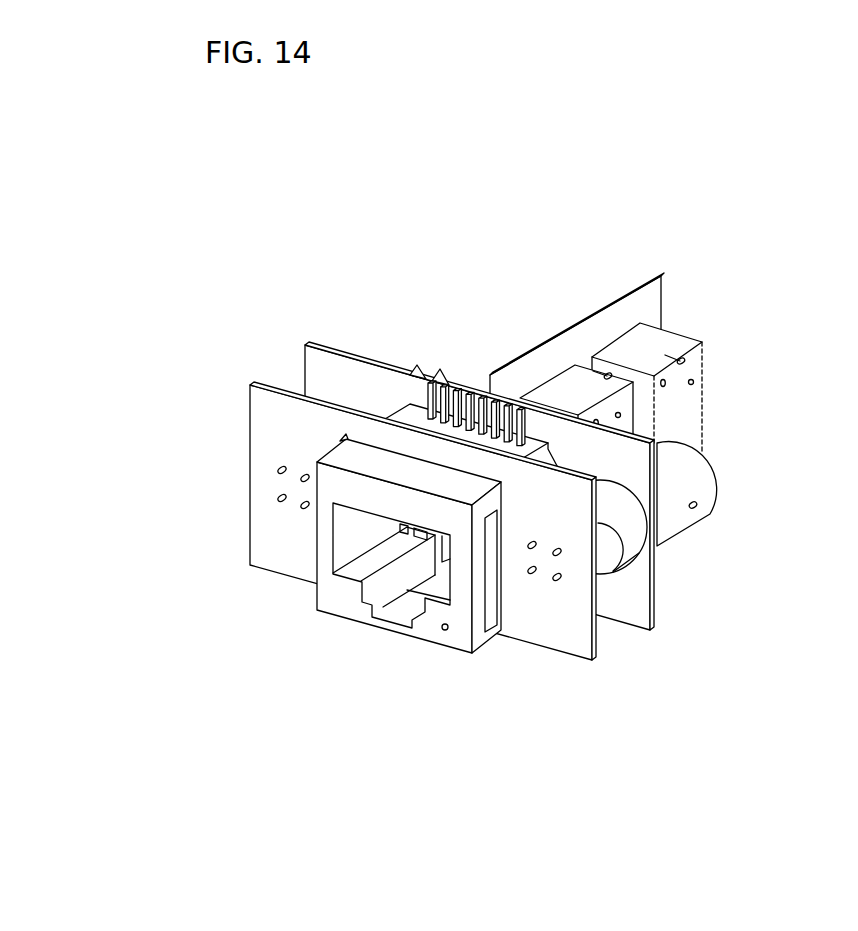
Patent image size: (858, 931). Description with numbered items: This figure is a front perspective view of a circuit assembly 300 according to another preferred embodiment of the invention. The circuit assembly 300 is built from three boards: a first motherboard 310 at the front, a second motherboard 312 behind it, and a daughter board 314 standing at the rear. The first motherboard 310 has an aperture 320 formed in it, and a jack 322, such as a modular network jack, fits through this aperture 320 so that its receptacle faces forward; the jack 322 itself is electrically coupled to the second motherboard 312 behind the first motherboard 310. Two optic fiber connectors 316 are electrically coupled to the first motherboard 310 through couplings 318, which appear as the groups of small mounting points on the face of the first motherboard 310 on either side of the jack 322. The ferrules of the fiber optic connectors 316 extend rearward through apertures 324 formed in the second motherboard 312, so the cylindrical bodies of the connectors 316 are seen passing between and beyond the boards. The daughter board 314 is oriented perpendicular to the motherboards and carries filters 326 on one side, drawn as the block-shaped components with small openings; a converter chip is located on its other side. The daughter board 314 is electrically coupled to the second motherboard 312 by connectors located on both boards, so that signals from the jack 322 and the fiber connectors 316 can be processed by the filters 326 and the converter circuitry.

The circuit assembly 300 is at (490, 480).
The first motherboard 310 is at (577, 643).
The second motherboard 312 is at (643, 613).
The daughter board 314 is at (652, 302).
The optic fiber connectors 316 is at (703, 473).
The couplings 318 is at (264, 491).
The aperture 320 is at (333, 547).
The jack 322 is at (356, 568).
The apertures 324 is at (640, 557).
The filters 326 is at (622, 414).